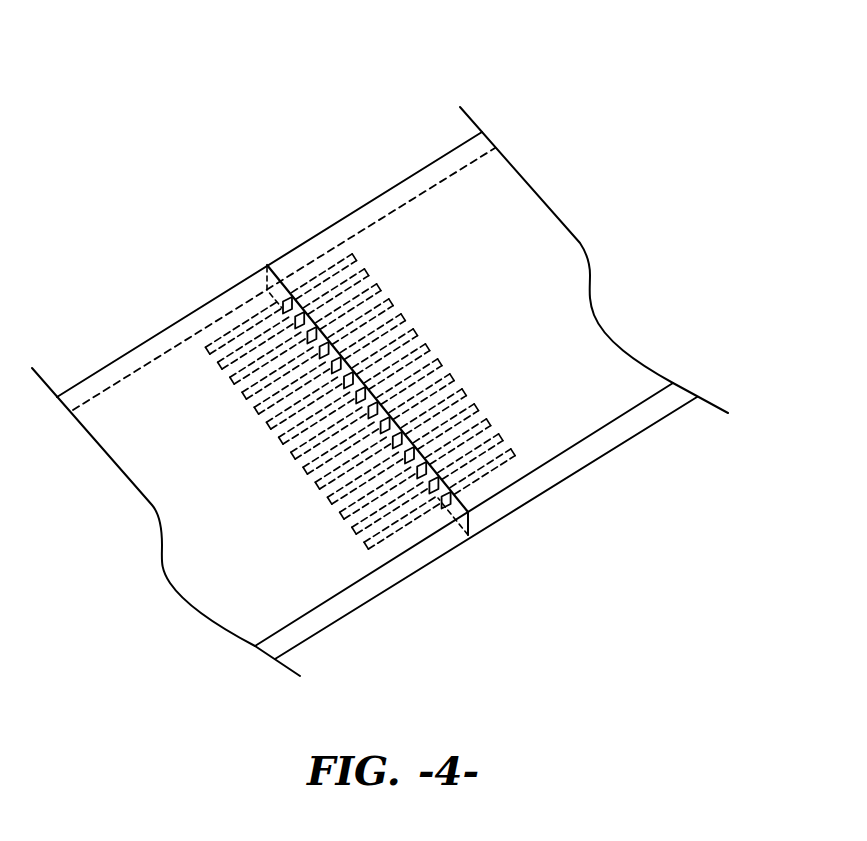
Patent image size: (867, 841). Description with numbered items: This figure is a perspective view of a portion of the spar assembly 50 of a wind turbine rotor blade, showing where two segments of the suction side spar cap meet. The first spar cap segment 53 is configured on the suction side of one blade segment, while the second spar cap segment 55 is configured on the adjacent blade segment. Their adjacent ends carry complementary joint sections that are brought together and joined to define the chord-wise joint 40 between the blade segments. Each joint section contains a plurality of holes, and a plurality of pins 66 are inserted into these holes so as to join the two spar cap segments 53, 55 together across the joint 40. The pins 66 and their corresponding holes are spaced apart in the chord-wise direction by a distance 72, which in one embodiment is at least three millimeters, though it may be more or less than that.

The spar assembly 50 is at (380, 341).
The joint 40 is at (273, 253).
The first spar cap segment 53 is at (123, 410).
The second spar cap segment 55 is at (458, 205).
The pins 66 is at (361, 403).
The distance 72 is at (368, 508).